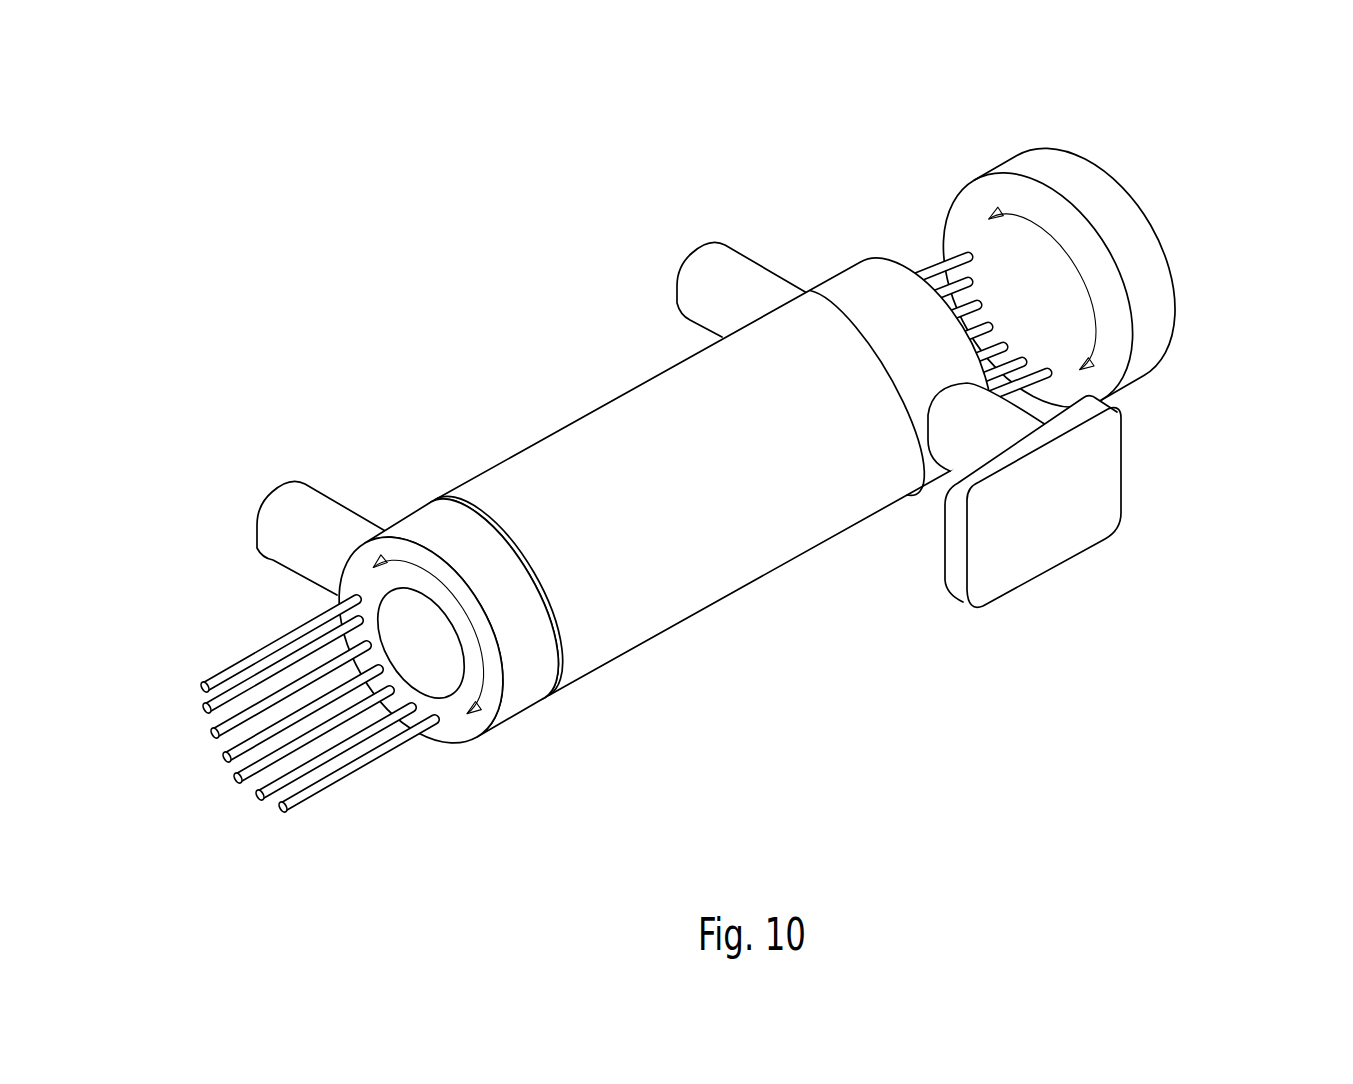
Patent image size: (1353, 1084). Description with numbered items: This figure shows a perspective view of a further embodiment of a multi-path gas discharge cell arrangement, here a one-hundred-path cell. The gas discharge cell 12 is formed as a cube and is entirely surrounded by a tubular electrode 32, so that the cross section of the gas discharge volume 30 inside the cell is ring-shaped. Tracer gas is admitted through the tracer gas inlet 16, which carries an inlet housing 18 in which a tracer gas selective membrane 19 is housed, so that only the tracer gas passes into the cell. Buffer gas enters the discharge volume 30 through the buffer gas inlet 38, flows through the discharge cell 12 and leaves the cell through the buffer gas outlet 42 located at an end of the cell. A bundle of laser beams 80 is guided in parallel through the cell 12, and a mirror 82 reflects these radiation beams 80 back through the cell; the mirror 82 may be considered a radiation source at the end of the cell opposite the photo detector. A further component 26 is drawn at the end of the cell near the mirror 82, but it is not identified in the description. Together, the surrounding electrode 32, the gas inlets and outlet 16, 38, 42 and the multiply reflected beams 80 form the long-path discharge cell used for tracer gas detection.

The gas discharge cell 12 is at (700, 474).
The tracer gas inlet 16 is at (960, 452).
The inlet housing 18 is at (957, 550).
The tracer gas selective membrane 19 is at (1069, 546).
The rotary knob 26 is at (1080, 237).
The gas discharge volume 30 is at (357, 583).
The tubular electrode 32 is at (603, 513).
The buffer gas inlet 38 is at (697, 293).
The buffer gas outlet 42 is at (290, 540).
The laser beams 80 is at (312, 792).
The mirror 82 is at (1132, 241).